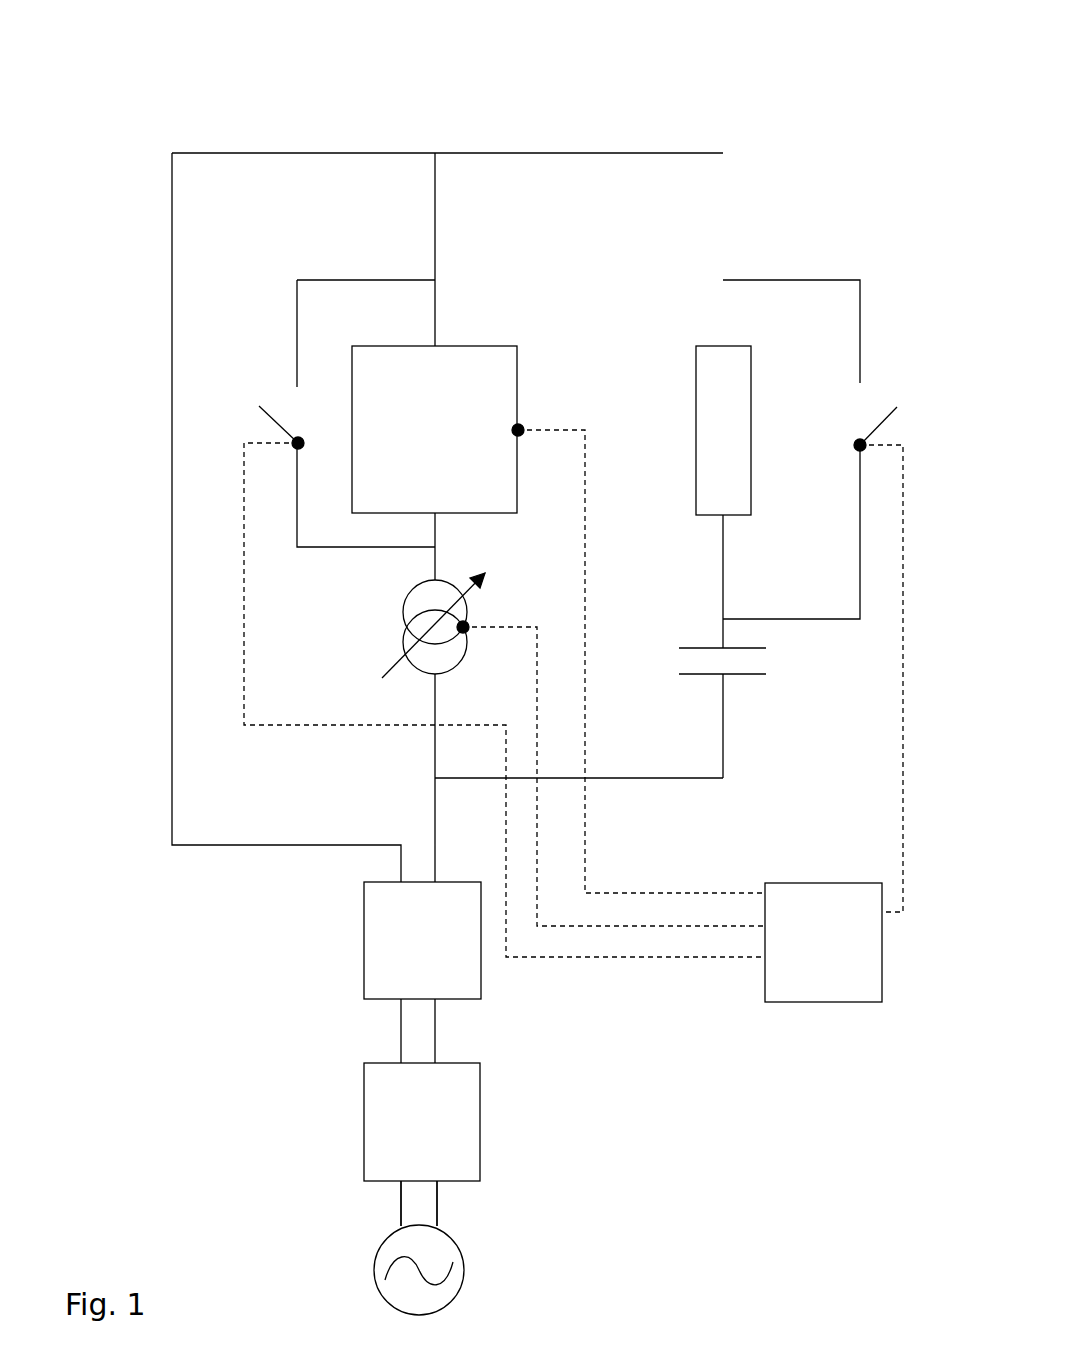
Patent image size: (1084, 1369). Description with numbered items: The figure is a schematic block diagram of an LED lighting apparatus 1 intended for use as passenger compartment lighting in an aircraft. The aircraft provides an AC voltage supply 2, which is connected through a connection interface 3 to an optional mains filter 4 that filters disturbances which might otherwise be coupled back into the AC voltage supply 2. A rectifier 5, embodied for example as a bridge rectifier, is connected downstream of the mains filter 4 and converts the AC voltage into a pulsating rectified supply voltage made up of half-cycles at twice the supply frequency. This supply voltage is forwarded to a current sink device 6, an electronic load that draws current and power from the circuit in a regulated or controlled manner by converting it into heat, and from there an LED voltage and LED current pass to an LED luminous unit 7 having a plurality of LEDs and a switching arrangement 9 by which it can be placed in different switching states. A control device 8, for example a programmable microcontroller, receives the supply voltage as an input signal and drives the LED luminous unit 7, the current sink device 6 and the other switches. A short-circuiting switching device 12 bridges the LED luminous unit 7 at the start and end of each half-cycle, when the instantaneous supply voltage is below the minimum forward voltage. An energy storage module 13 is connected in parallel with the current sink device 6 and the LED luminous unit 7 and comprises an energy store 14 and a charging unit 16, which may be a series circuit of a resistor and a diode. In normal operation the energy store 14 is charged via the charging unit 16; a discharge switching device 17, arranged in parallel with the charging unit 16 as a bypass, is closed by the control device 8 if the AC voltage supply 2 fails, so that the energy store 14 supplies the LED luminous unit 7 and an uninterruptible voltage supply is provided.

The LED lighting apparatus 1 is at (605, 77).
The AC voltage supply 2 is at (463, 1270).
The connection interface 3 is at (437, 1204).
The mains filter 4 is at (422, 1122).
The rectifier 5 is at (422, 940).
The current sink device 6 is at (463, 627).
The LED luminous unit 7 is at (434, 429).
The control device 8 is at (573, 713).
The switching arrangement 9 is at (434, 429).
The short-circuiting switching device 12 is at (292, 450).
The energy storage module 13 is at (798, 427).
The energy store 14 is at (725, 676).
The charging unit 16 is at (723, 430).
The discharge switching device 17 is at (855, 452).